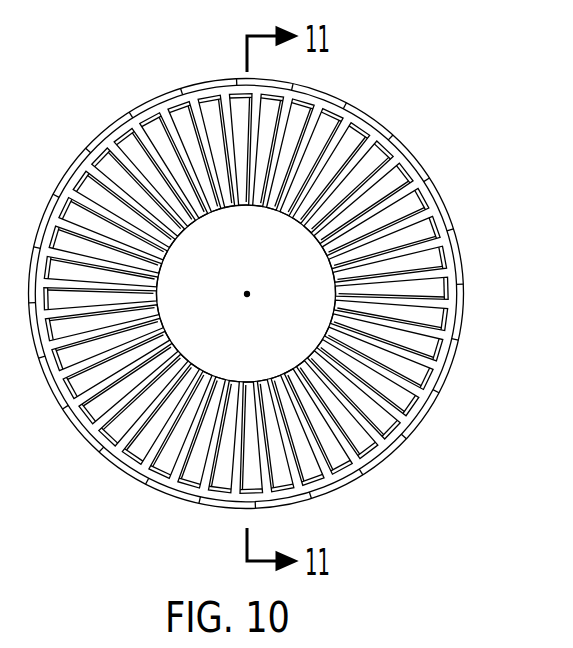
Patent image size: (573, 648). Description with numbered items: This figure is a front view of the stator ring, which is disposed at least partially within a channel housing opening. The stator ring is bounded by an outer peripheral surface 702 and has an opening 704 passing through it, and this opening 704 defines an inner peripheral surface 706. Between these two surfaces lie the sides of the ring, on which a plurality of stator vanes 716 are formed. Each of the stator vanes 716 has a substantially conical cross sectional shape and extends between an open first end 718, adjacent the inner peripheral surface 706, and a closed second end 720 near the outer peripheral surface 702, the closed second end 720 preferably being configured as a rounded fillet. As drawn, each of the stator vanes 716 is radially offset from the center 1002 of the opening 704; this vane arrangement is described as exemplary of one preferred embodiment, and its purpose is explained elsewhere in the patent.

The outer peripheral surface 702 is at (432, 175).
The opening 704 is at (234, 283).
The inner peripheral surface 706 is at (333, 328).
The stator vanes 716 is at (300, 168).
The open first end 718 is at (264, 206).
The closed second end 720 is at (296, 113).
The center 1002 is at (247, 294).